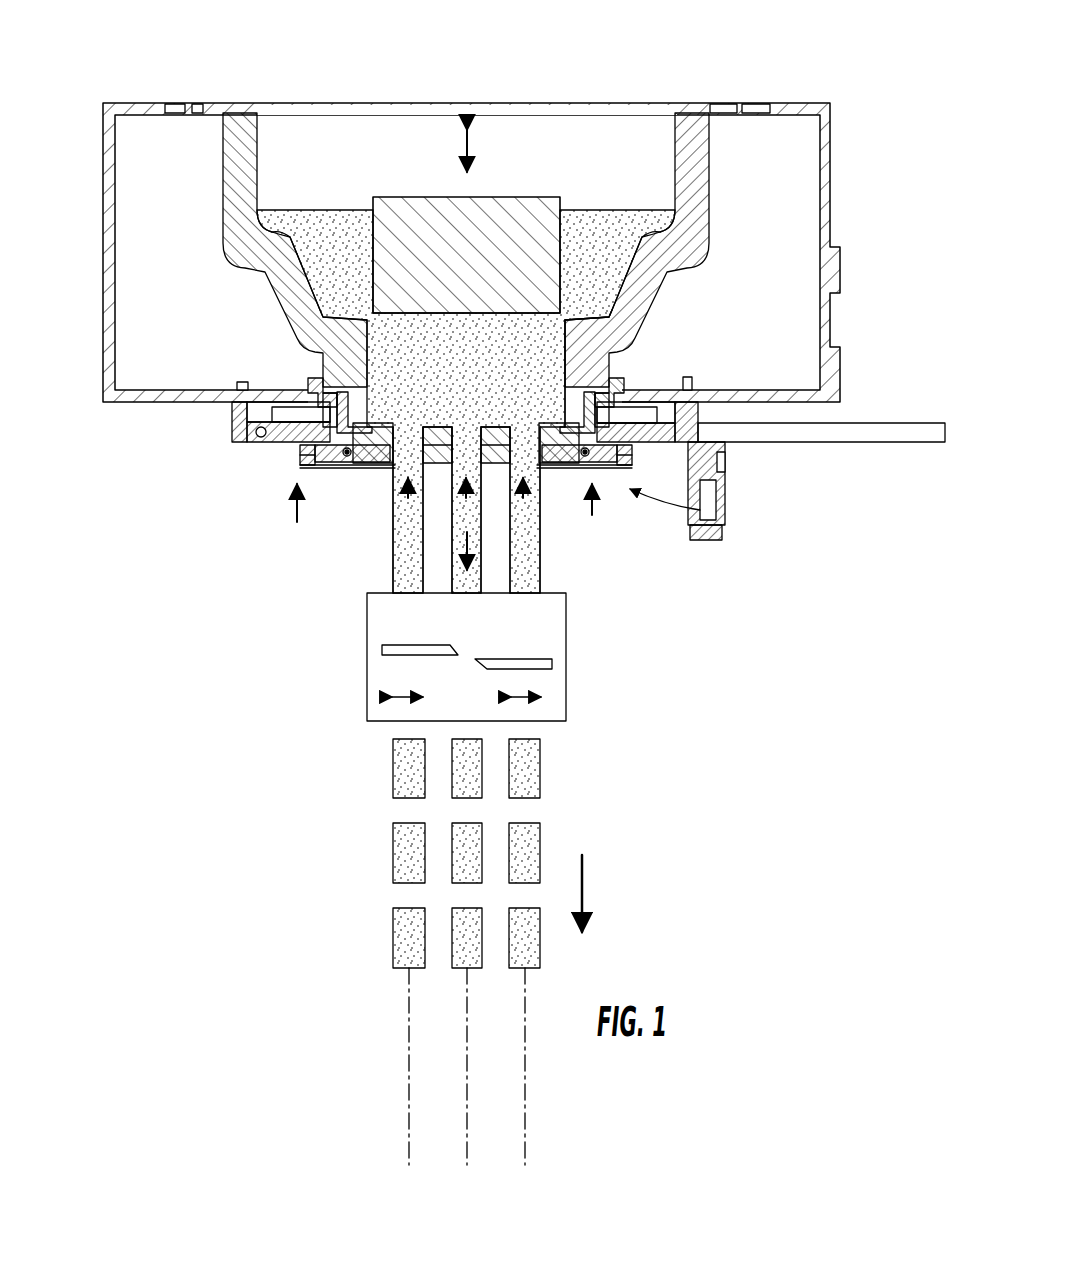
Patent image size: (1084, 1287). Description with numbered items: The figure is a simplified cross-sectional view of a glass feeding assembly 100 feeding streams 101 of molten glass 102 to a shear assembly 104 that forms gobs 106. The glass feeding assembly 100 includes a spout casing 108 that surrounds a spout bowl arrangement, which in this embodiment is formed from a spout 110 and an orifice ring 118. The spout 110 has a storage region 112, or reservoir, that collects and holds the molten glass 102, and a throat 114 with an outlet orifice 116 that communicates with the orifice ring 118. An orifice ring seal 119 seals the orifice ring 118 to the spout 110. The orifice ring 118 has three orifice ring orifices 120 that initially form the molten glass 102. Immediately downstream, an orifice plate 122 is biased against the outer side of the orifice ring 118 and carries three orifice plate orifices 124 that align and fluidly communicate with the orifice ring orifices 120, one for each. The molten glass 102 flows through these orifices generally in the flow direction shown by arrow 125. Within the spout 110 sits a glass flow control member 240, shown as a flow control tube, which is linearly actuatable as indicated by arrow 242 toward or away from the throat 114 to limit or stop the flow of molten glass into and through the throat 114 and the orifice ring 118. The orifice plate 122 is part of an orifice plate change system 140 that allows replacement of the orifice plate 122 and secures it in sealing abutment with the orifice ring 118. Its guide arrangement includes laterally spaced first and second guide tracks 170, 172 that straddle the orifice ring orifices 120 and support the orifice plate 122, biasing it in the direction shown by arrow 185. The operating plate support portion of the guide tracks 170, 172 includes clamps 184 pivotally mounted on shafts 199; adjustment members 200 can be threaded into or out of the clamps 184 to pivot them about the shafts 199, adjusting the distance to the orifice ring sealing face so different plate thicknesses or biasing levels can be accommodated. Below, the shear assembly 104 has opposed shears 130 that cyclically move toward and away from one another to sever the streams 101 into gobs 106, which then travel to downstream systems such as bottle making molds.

The glass feeding assembly 100 is at (128, 48).
The streams of molten glass 101 is at (545, 537).
The molten glass 102 is at (357, 257).
The shear assembly 104 is at (566, 626).
The gobs 106 is at (540, 763).
The spout casing 108 is at (108, 262).
The spout 110 is at (648, 298).
The storage region 112 is at (405, 155).
The throat 114 is at (590, 352).
The outlet orifice 116 is at (534, 355).
The orifice ring 118 is at (323, 395).
The orifice ring seal 119 is at (587, 383).
The orifice ring orifices 120 is at (523, 416).
The orifice plate 122 is at (388, 467).
The orifice plate orifices 124 is at (463, 507).
The arrow 125 is at (437, 593).
The opposed shears 130 is at (385, 650).
The orifice plate change system 140 is at (726, 510).
The first guide track 170 is at (594, 505).
The second guide track 172 is at (343, 481).
The clamps 184 is at (347, 470).
The arrow 185 is at (276, 516).
The shafts 199 is at (312, 452).
The adjustment members 200 is at (317, 463).
The glass flow control member 240 is at (550, 197).
The arrow 242 is at (477, 152).